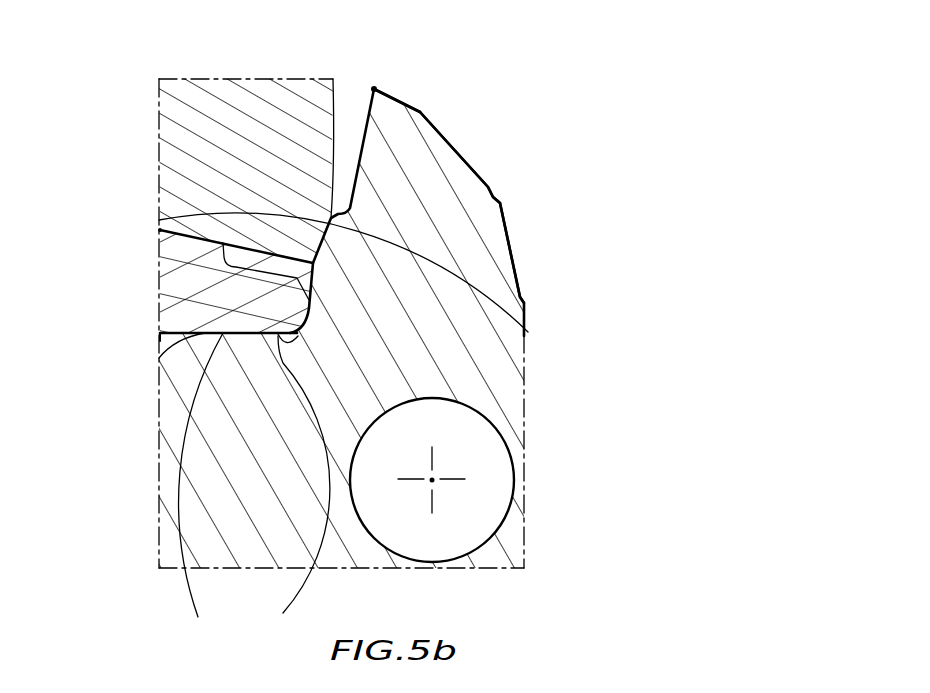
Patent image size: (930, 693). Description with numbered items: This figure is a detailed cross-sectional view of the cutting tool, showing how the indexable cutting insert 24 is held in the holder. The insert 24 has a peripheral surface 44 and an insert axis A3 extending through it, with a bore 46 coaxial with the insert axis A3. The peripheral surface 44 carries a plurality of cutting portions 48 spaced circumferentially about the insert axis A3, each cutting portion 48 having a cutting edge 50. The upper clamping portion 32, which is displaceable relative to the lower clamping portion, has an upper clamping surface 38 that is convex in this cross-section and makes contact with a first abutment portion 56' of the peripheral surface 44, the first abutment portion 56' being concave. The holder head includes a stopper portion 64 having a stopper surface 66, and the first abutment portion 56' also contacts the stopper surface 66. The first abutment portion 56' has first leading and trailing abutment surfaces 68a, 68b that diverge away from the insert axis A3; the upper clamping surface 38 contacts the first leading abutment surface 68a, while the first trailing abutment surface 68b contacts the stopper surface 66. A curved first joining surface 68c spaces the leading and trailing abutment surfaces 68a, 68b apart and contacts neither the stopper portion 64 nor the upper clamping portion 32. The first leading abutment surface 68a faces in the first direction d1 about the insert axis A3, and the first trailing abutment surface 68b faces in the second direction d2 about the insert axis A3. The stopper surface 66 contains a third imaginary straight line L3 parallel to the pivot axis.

The indexable cutting insert 24 is at (477, 268).
The upper clamping portion 32 is at (276, 145).
The upper clamping surface 38 is at (332, 242).
The peripheral surface 44 is at (505, 212).
The bore 46 is at (460, 463).
The cutting portion 48 is at (412, 162).
The cutting edge 50 is at (374, 89).
The first abutment portion 56' is at (171, 282).
The stopper portion 64 is at (304, 308).
The stopper surface 66 is at (216, 338).
The first leading abutment surface 68a is at (223, 243).
The first trailing abutment surface 68b is at (205, 333).
The first joining surface 68c is at (291, 491).
The insert axis A3 is at (436, 480).
The third imaginary straight line L3 is at (207, 333).
The first direction d1 is at (498, 304).
The second direction d2 is at (202, 491).